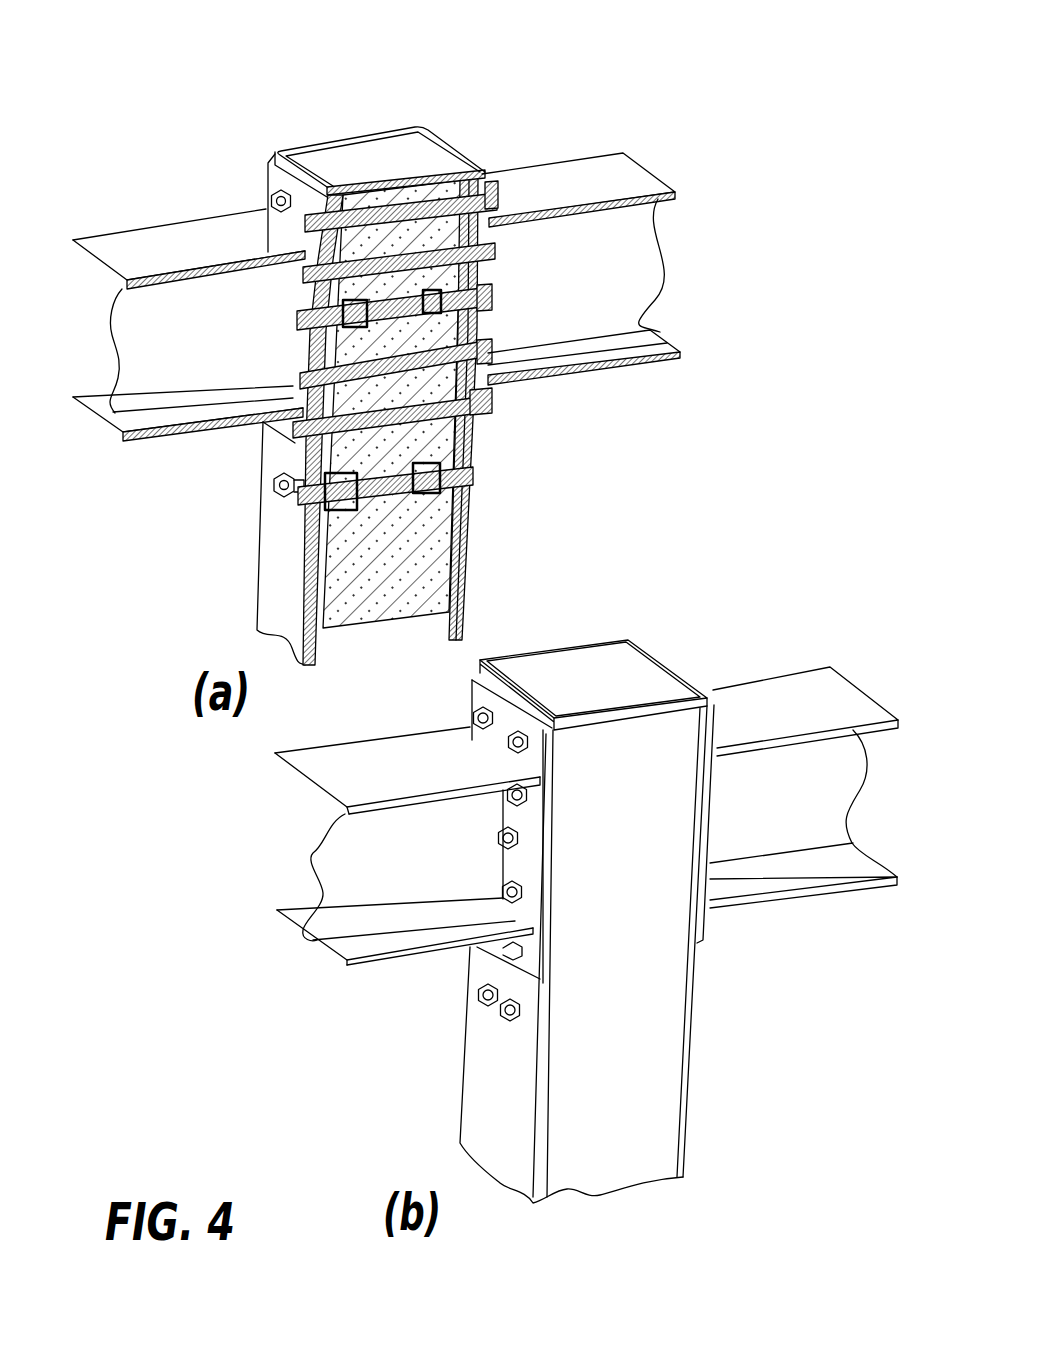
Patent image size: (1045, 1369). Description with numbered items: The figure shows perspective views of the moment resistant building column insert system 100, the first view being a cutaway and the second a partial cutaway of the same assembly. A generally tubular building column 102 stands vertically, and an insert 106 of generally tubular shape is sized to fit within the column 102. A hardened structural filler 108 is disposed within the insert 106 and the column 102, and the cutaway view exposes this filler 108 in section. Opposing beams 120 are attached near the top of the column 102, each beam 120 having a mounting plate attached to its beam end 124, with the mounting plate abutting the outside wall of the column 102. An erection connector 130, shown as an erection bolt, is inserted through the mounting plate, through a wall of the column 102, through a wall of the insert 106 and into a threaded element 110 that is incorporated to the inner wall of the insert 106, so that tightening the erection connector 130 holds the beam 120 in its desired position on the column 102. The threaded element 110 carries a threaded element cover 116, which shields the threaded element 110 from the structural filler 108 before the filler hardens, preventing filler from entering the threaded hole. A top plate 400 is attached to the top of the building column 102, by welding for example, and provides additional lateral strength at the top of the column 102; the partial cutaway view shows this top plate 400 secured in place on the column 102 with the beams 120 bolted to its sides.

The moment resistant building column insert system 100 is at (140, 63).
The building column 102 is at (258, 572).
The insert 106 is at (335, 590).
The hardened structural filler 108 is at (462, 572).
The threaded element 110 is at (343, 277).
The threaded element cover 116 is at (468, 430).
The beam 120 is at (155, 225).
The beam end 124 is at (268, 163).
The erection connector 130 is at (310, 318).
The top plate 400 is at (435, 145).